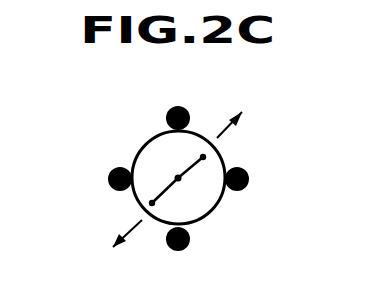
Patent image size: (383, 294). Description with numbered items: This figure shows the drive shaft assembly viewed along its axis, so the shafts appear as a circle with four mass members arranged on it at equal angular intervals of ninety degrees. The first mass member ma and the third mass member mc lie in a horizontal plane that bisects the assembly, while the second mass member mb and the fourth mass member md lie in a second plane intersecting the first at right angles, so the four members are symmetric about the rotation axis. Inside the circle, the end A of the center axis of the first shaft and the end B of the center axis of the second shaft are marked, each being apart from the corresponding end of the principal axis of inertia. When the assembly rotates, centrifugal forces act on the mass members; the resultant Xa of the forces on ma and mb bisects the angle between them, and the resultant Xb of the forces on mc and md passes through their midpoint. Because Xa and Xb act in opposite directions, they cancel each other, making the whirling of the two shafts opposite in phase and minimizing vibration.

The fourth mass member md is at (177, 106).
The second mass member mb is at (181, 254).
The first mass member ma is at (100, 180).
The third mass member mc is at (259, 180).
The end of the center axis A is at (165, 199).
The end of the center axis B is at (192, 158).
The resultant Xa is at (115, 249).
The resultant Xb is at (239, 111).